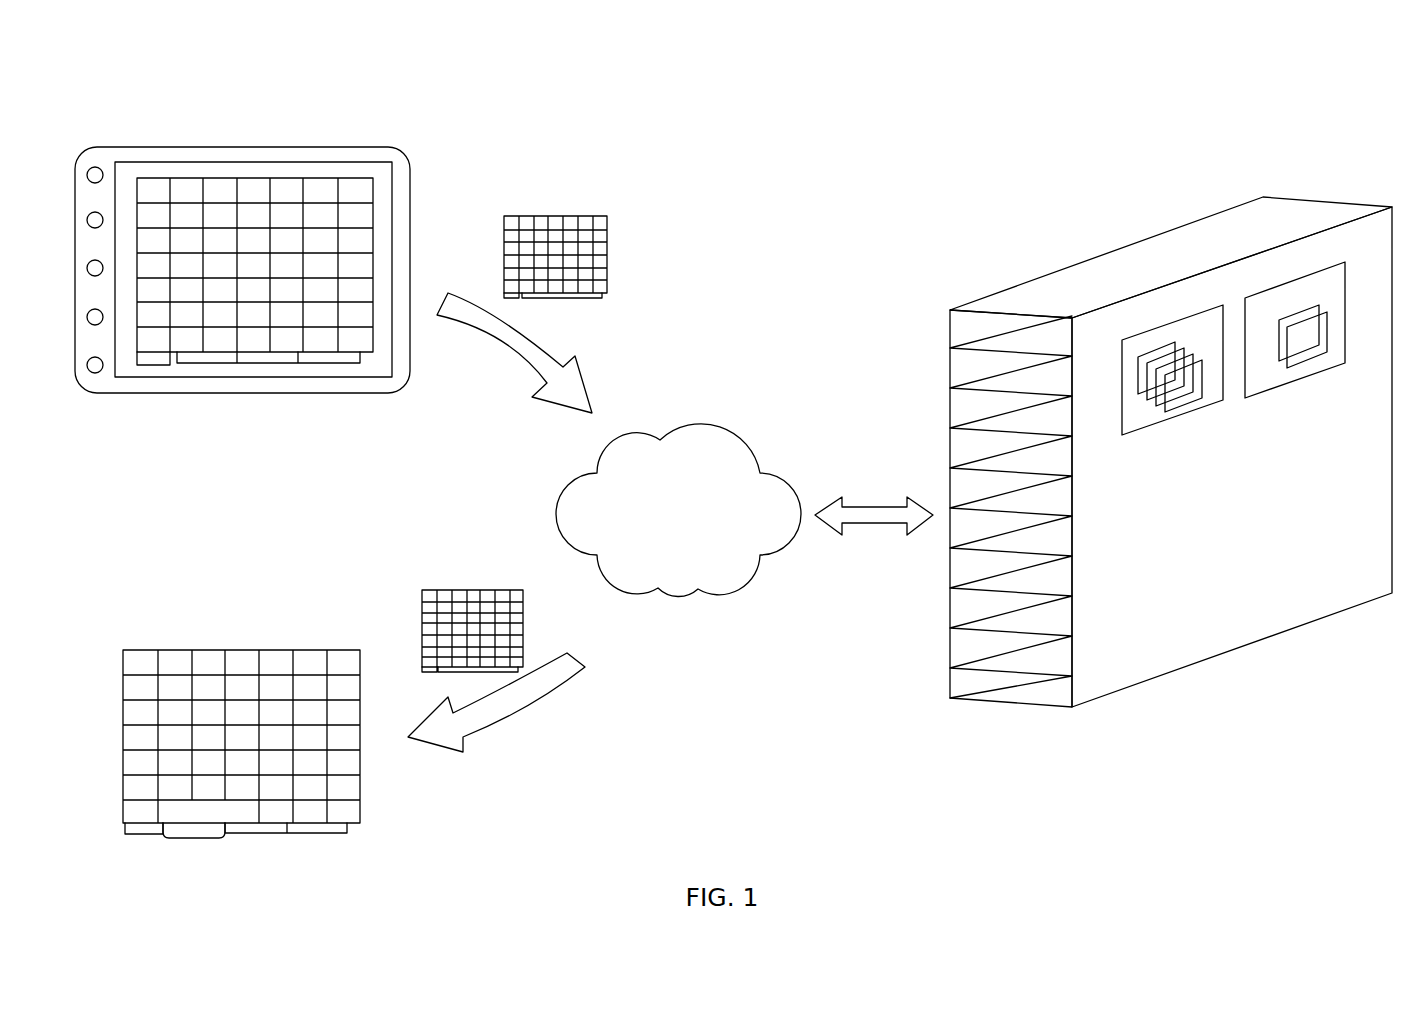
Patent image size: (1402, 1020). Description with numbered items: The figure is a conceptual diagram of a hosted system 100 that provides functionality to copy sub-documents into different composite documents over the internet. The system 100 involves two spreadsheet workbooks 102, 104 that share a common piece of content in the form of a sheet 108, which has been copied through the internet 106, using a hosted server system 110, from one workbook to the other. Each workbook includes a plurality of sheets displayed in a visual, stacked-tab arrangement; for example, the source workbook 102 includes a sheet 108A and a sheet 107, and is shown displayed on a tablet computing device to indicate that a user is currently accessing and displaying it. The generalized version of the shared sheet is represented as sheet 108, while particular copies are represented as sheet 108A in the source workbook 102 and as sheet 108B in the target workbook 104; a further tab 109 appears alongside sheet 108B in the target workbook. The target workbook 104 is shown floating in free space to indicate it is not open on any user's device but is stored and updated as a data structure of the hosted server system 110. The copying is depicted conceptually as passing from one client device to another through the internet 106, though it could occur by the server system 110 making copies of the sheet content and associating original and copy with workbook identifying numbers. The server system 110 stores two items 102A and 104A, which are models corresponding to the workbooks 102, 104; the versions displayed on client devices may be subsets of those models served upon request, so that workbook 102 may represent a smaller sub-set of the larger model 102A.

The hosted system 100 is at (168, 52).
The spreadsheet workbook 102 is at (287, 178).
The item (model of workbook) 102A is at (1172, 323).
The target workbook 104 is at (207, 650).
The item (model of workbook) 104A is at (1295, 275).
The internet 106 is at (677, 433).
The sheet 107 is at (200, 365).
The sheet 108 is at (555, 215).
The sheet (source copy) 108A is at (153, 367).
The sheet (target copy) 108B is at (195, 840).
The tab 109 is at (142, 837).
The hosted server system 110 is at (1068, 265).